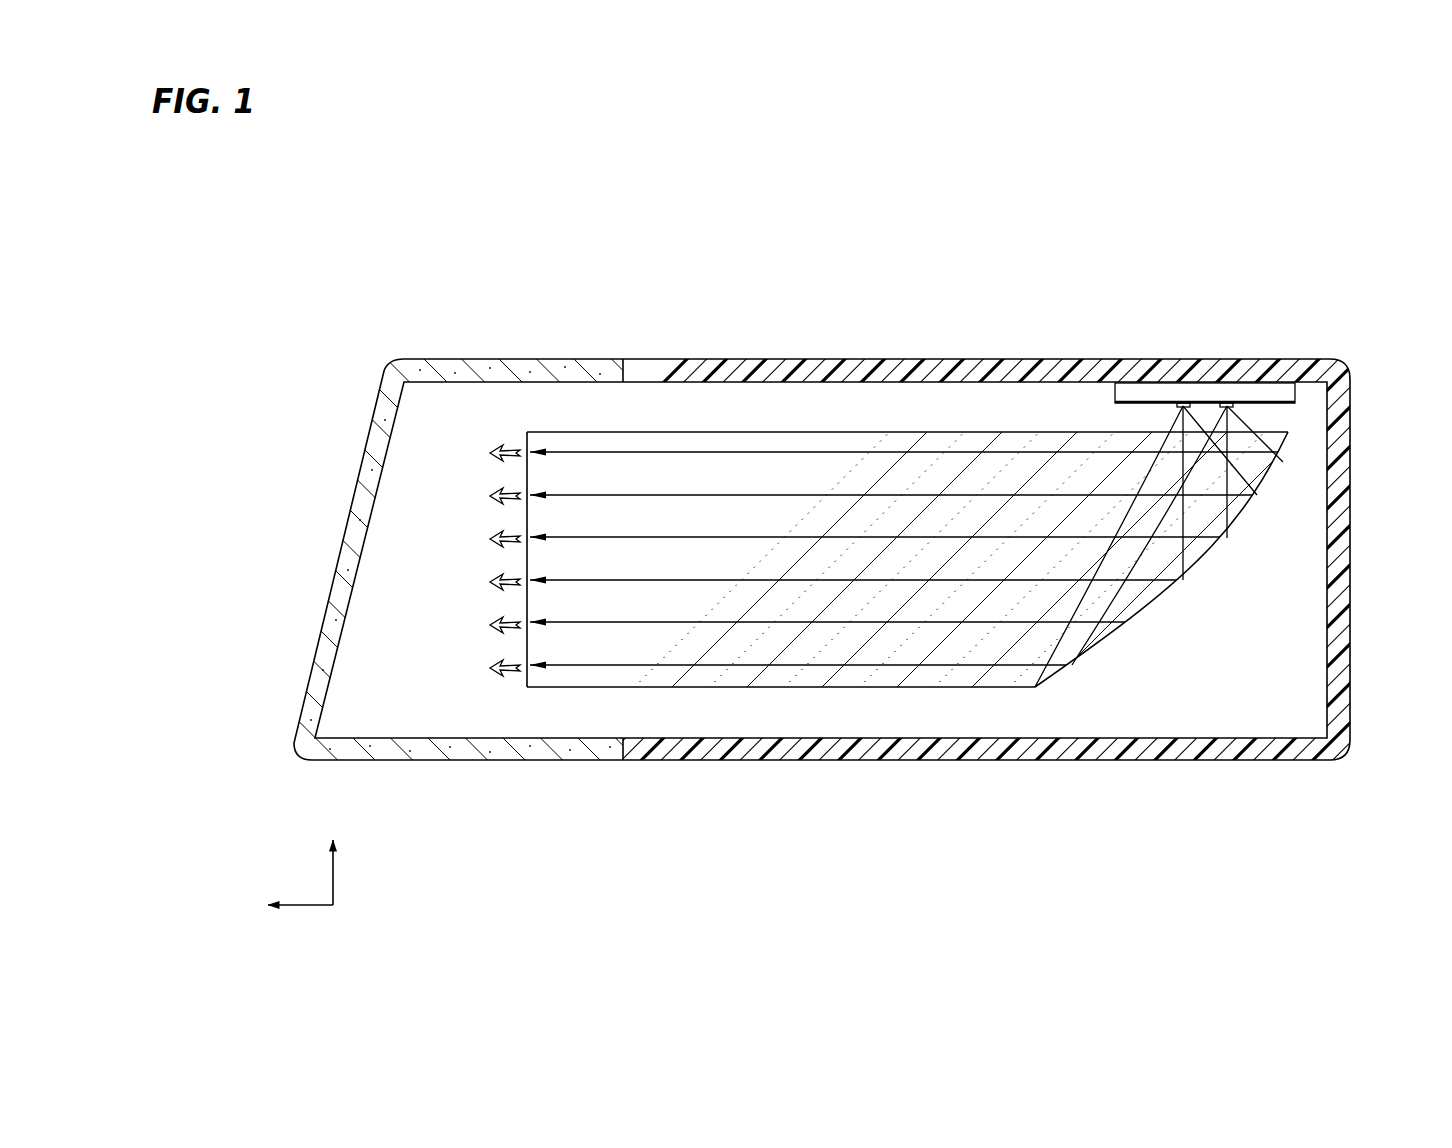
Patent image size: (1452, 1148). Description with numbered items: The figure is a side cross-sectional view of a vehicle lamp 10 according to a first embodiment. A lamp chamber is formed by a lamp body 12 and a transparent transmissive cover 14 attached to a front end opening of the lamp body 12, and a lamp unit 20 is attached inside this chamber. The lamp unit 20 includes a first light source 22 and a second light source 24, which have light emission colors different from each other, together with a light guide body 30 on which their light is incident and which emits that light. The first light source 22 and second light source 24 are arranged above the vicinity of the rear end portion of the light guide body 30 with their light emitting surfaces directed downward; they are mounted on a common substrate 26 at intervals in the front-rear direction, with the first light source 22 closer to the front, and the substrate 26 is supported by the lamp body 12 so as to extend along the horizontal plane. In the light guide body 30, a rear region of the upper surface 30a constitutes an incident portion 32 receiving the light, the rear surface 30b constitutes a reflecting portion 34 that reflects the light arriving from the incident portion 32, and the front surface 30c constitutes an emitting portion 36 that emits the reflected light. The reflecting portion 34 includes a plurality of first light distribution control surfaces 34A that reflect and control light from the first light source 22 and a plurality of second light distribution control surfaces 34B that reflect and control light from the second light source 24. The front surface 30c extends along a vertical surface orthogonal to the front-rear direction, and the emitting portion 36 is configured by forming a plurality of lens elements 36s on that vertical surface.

The vehicle lamp 10 is at (543, 213).
The lamp body 12 is at (1320, 358).
The transmissive cover 14 is at (417, 358).
The lamp unit 20 is at (612, 400).
The first light source 22 is at (1180, 397).
The second light source 24 is at (1232, 397).
The substrate 26 is at (1113, 393).
The light guide body 30 is at (817, 415).
The upper surface 30a is at (907, 432).
The rear surface 30b is at (1247, 510).
The front surface 30c is at (527, 513).
The incident portion 32 is at (1247, 430).
The reflecting portion 34 is at (1312, 677).
The first light distribution control surfaces 34A is at (1168, 593).
The second light distribution control surfaces 34B is at (1222, 542).
The emitting portion 36 is at (520, 639).
The lens elements 36s is at (527, 606).